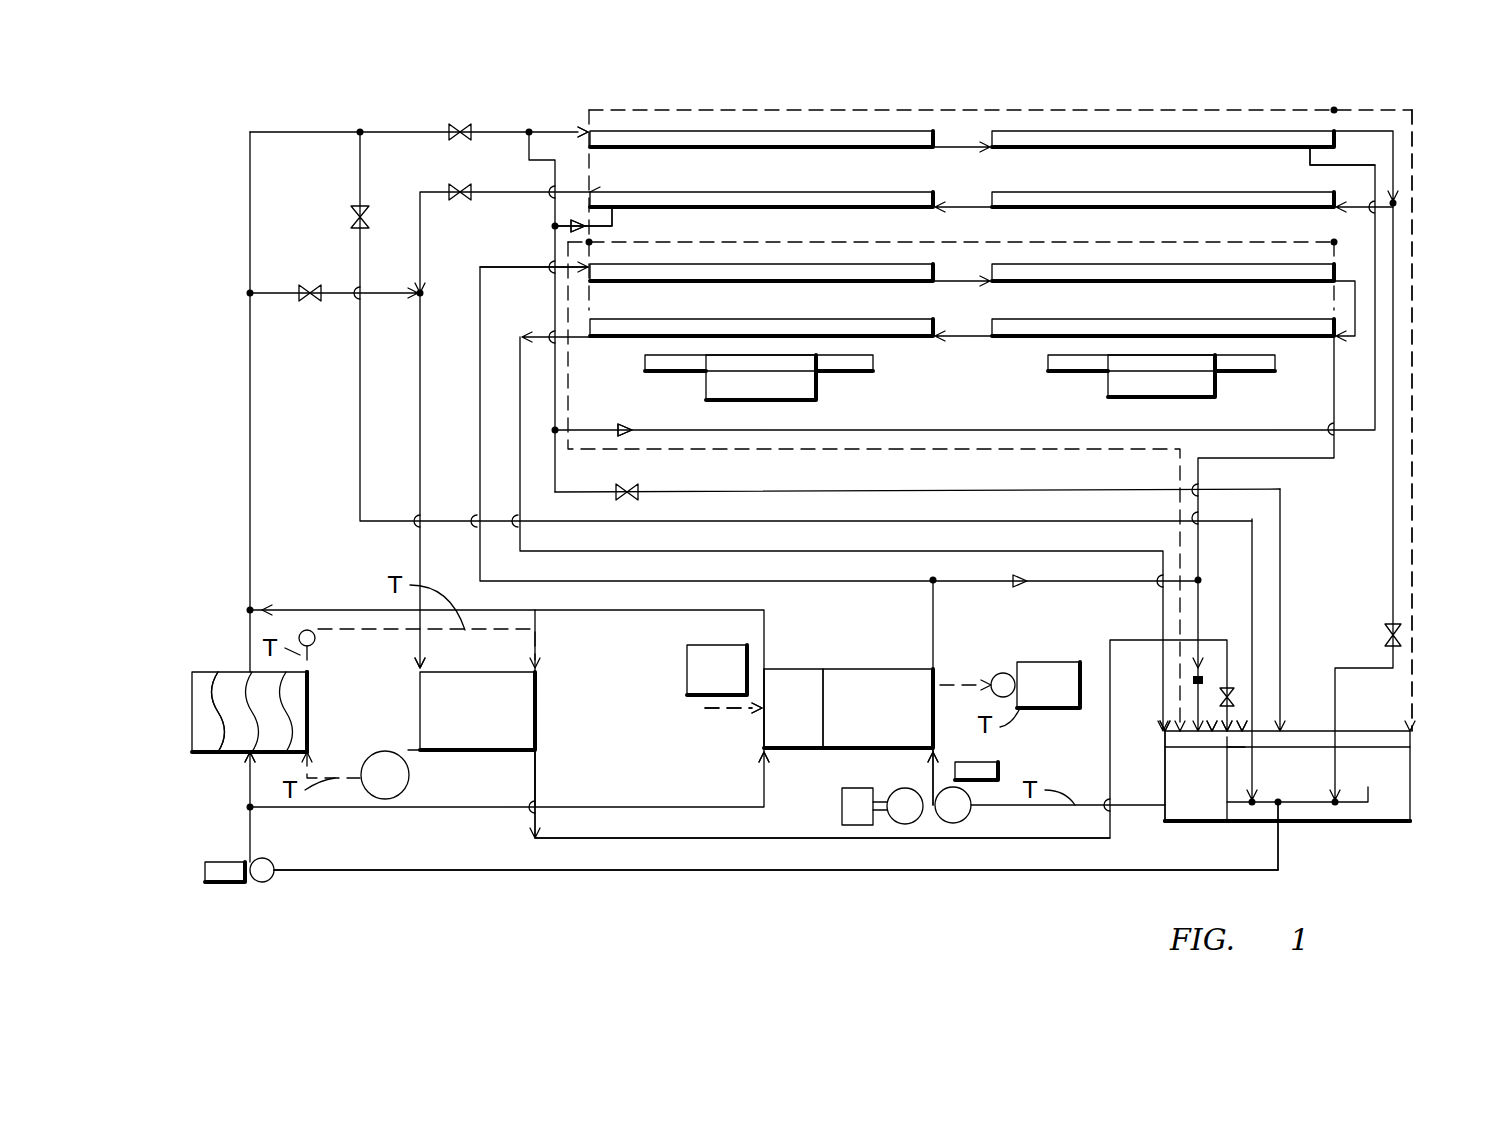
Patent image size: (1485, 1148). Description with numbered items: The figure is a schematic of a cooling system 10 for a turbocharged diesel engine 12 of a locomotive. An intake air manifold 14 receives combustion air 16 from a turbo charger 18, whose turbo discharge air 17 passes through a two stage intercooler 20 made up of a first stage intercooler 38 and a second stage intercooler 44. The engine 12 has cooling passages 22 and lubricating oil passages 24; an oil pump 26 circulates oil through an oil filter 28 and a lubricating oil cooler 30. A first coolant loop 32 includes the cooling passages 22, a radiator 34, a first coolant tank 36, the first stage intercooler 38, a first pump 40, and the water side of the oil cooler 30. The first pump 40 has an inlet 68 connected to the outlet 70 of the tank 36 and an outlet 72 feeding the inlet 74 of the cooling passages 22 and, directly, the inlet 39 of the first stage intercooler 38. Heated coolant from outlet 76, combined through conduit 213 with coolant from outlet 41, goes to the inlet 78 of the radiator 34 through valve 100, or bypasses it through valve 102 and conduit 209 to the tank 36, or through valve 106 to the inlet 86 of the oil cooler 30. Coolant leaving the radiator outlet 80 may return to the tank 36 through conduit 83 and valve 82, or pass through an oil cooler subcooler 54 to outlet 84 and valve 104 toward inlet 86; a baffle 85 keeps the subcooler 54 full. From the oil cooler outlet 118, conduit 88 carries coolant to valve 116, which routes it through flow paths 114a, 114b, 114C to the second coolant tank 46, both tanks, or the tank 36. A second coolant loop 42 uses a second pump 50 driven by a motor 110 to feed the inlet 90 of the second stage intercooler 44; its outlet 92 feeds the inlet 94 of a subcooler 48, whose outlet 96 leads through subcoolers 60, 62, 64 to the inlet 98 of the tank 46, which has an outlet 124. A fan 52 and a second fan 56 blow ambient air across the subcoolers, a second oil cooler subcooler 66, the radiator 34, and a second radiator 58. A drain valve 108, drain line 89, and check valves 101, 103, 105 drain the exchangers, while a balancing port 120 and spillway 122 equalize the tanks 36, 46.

The cooling system 10 is at (1390, 875).
The turbocharged diesel engine 12 is at (192, 680).
The intake air manifold 14 is at (1040, 662).
The combustion air 16 is at (965, 685).
The turbo discharge air 17 is at (722, 710).
The turbo charger 18 is at (715, 645).
The two stage intercooler 20 is at (823, 760).
The cooling passages 22 is at (222, 718).
The lubricating oil passages 24 is at (307, 712).
The oil pump 26 is at (300, 615).
The oil filter 28 is at (410, 775).
The lubricating oil cooler 30 is at (420, 694).
The first coolant loop 32 is at (630, 786).
The radiator 34 is at (680, 131).
The first coolant tank 36 is at (1410, 766).
The first stage intercooler 38 is at (795, 669).
The inlet 39 is at (795, 750).
The first pump 40 is at (270, 860).
The outlet 41 is at (766, 665).
The second coolant loop 42 is at (1033, 758).
The second stage intercooler 44 is at (875, 669).
The second coolant tank 46 is at (1165, 792).
The subcooler 48 is at (720, 282).
The second pump 50 is at (960, 823).
The fan 52 is at (818, 383).
The oil cooler subcooler 54 is at (660, 192).
The second fan 56 is at (1108, 383).
The second radiator 58 is at (1130, 131).
The subcooler 60 is at (1140, 265).
The subcooler 62 is at (1185, 319).
The subcooler 64 is at (745, 319).
The second oil cooler subcooler 66 is at (1065, 192).
The inlet 68 is at (274, 880).
The outlet 70 is at (1280, 822).
The outlet 72 is at (215, 862).
The inlet 74 is at (250, 755).
The outlet 76 is at (250, 672).
The inlet 78 is at (588, 130).
The outlet 80 is at (940, 146).
The valve 82 is at (1398, 628).
The conduit 83 is at (1394, 462).
The outlet 84 is at (590, 192).
The baffle 85 is at (615, 212).
The inlet 86 is at (418, 668).
The conduit 88 is at (655, 838).
The drain line 89 is at (810, 491).
The inlet 90 is at (930, 760).
The outlet 92 is at (935, 668).
The inlet 94 is at (588, 268).
The outlet 96 is at (930, 282).
The inlet 98 is at (1163, 731).
The valve 100 is at (460, 124).
The check valve 101 is at (553, 228).
The valve 102 is at (358, 208).
The check valve 103 is at (625, 423).
The valve 104 is at (460, 184).
The check valve 105 is at (1024, 578).
The valve 106 is at (312, 302).
The drain valve 108 is at (630, 484).
The motor 110 is at (905, 825).
The flow path 114a is at (1212, 728).
The flow path 114b is at (1228, 728).
The flow path 114C is at (1243, 728).
The valve 116 is at (1230, 690).
The oil cooler outlet 118 is at (535, 748).
The balancing port 120 is at (1228, 790).
The spillway 122 is at (1230, 742).
The outlet 124 is at (1165, 815).
The conduit 209 is at (360, 445).
The conduit 213 is at (250, 395).